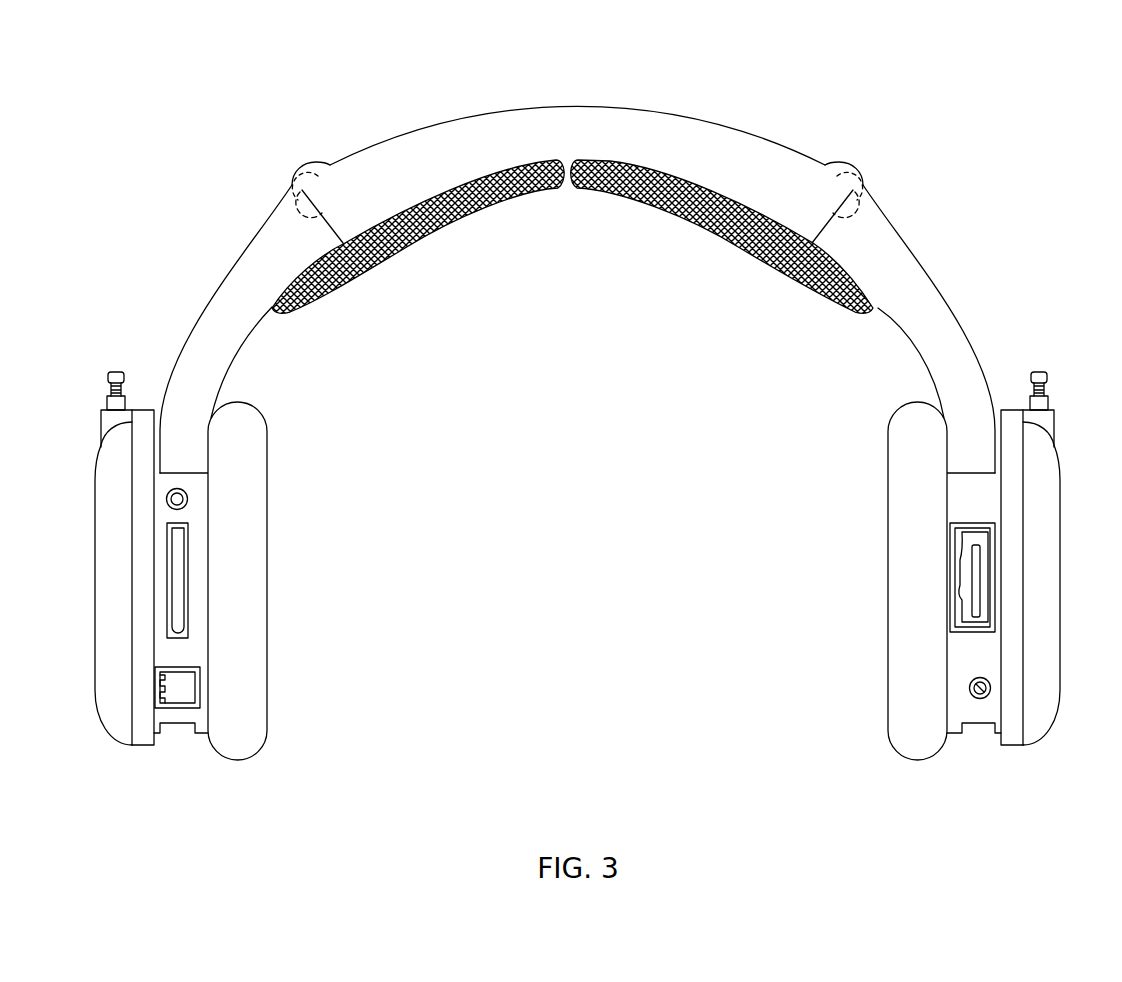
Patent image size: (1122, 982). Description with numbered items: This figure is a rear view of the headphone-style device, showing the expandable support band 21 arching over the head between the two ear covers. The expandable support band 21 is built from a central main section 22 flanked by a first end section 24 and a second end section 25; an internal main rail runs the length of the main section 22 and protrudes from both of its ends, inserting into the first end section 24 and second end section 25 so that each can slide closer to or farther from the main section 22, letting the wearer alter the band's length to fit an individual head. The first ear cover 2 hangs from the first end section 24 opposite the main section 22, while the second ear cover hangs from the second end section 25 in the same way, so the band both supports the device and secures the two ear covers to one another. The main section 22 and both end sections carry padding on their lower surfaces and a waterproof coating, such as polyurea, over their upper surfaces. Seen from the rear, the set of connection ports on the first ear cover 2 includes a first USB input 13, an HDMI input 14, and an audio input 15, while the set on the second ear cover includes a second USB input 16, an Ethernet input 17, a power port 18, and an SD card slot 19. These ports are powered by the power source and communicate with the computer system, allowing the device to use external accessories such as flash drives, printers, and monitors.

The first ear cover 2 is at (585, 427).
The first Universal Serial Bus (USB) input 13 is at (977, 724).
The High-Definition Multimedia Interface (HDMI) input 14 is at (966, 582).
The audio input 15 is at (970, 687).
The second USB input 16 is at (180, 724).
The Ethernet input 17 is at (175, 686).
The power port 18 is at (166, 499).
The Secure Digital (SD) card slot 19 is at (178, 583).
The expandable support band 21 is at (567, 254).
The main section 22 is at (633, 122).
The first end section 24 is at (912, 268).
The second end section 25 is at (242, 280).